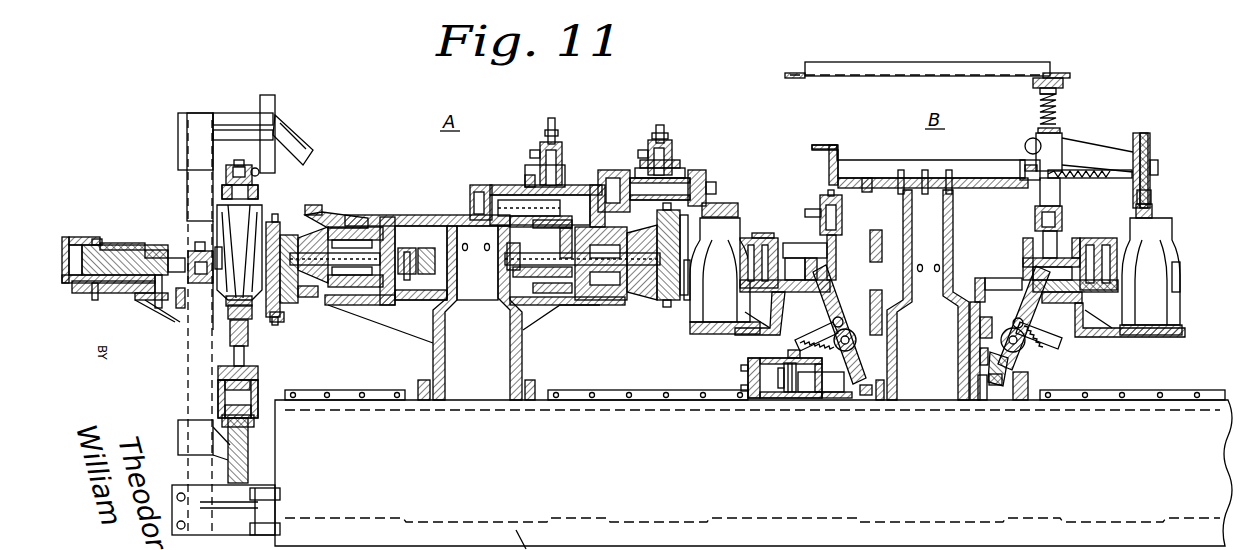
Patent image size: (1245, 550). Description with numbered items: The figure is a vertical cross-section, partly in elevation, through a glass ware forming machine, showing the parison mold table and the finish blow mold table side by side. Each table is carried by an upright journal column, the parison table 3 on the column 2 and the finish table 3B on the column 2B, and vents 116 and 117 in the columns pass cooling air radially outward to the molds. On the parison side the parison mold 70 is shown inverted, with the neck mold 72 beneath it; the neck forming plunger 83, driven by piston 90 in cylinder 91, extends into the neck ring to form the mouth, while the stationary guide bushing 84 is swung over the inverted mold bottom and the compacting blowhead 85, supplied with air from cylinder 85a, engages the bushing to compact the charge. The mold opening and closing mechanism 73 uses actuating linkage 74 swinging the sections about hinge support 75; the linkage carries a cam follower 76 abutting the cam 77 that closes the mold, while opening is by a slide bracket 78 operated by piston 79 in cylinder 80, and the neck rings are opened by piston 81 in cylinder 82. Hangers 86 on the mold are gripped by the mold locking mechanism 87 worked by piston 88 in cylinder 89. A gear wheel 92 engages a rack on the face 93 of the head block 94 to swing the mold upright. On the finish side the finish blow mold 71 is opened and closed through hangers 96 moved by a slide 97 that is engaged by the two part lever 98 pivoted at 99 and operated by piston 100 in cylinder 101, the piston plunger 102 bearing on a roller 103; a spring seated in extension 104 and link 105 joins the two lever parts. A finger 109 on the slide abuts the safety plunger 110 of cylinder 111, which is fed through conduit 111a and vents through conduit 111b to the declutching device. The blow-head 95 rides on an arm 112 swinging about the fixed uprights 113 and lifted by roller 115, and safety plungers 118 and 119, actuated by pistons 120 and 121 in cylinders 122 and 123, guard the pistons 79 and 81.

The journal column 2 is at (510, 342).
The journal column 2B is at (928, 295).
The table 3 is at (592, 304).
The table 3B is at (1052, 300).
The parison mold 70 is at (262, 215).
The finish blow mold 71 is at (730, 236).
The neck mold 72 is at (250, 310).
The parison mold opening and closing mechanism 73 is at (288, 250).
The actuating linkage 74 is at (335, 236).
The hinge support 75 is at (278, 322).
The cam follower 76 is at (414, 255).
The cam 77 is at (430, 258).
The slide bracket 78 is at (530, 254).
The piston 79 is at (562, 208).
The cylinder 80 is at (580, 185).
The piston 81 is at (616, 178).
The cylinder 82 is at (624, 178).
The neck forming plunger 83 is at (243, 328).
The stationary guide bushing 84 is at (258, 191).
The compacting blowhead 85 is at (240, 165).
The cylinder 85a is at (183, 150).
The hanger 86 is at (219, 250).
The mold locking mechanism 87 is at (190, 256).
The piston 88 is at (92, 250).
The cylinder 89 is at (76, 240).
The piston 90 is at (218, 380).
The cylinder 91 is at (218, 398).
The gear wheel 92 is at (318, 298).
The face 93 is at (305, 210).
The head block 94 is at (383, 215).
The blow-head 95 is at (1152, 208).
The hanger 96 is at (790, 246).
The slide 97 is at (826, 278).
The two part lever 98 is at (830, 292).
The pivot 99 is at (852, 332).
The piston 100 is at (786, 400).
The cylinder 101 is at (758, 400).
The piston plunger 102 is at (838, 380).
The roller 103 is at (872, 390).
The extension 104 is at (790, 352).
The link 105 is at (812, 338).
The finger 109 is at (836, 255).
The plunger 110 is at (805, 261).
The cylinder 111 is at (825, 200).
The conduit 111a is at (828, 200).
The conduit 111b is at (808, 212).
The arm 112 is at (1090, 150).
The fixed upright 113 is at (1058, 240).
The roller 115 is at (1026, 144).
The vent 116 is at (466, 252).
The vent 117 is at (937, 264).
The safety plunger 118 is at (540, 170).
The safety plunger 119 is at (668, 170).
The piston 120 is at (540, 152).
The piston 121 is at (675, 150).
The cylinder 122 is at (558, 145).
The cylinder 123 is at (668, 140).